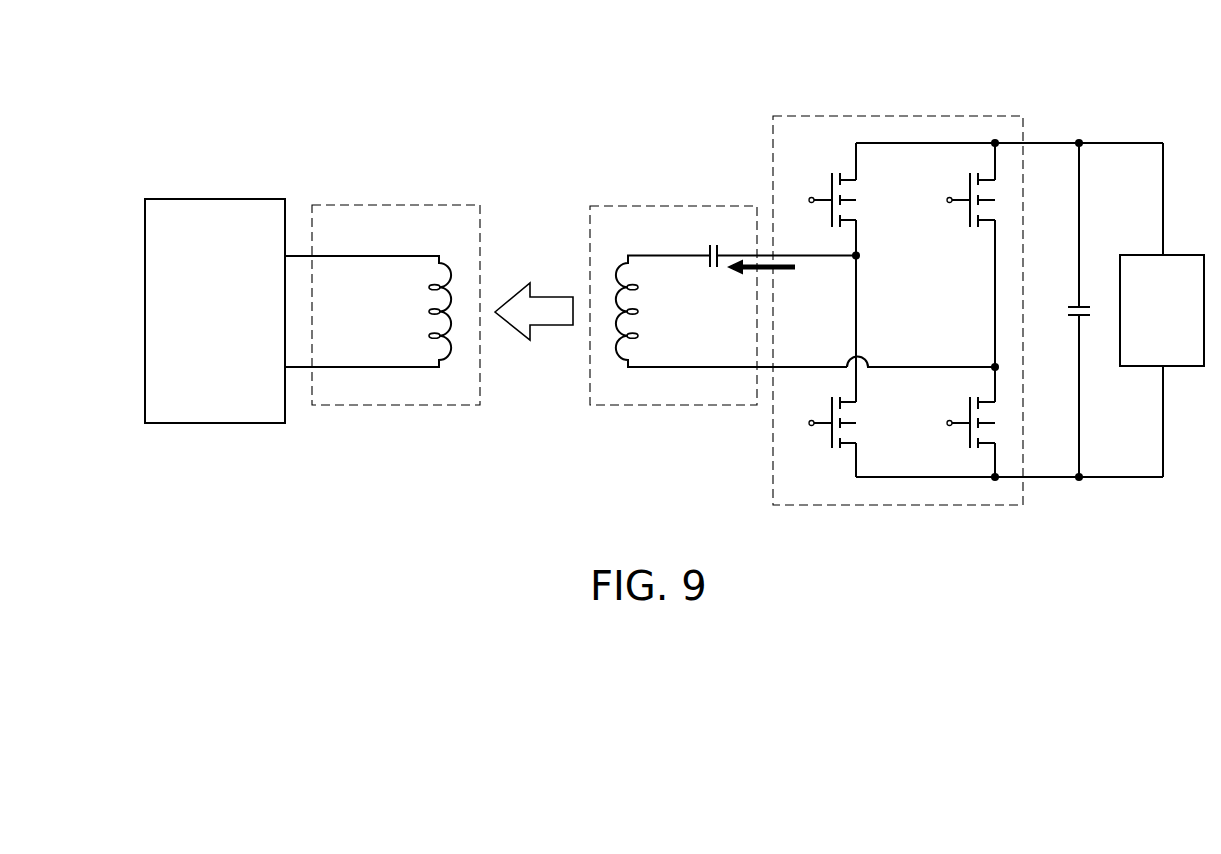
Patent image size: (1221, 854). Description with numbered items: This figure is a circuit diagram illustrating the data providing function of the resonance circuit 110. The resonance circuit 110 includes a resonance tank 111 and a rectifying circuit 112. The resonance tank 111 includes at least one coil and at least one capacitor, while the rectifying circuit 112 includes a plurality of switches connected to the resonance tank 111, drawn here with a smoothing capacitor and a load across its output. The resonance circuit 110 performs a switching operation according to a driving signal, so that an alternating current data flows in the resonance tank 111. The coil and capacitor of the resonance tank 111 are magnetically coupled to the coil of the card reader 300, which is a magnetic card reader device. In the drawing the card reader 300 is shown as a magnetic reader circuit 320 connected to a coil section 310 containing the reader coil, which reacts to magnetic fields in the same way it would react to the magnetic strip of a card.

The card reader 300 is at (311, 123).
The reader coil unit 310 is at (395, 205).
The magnetic reader circuit 320 is at (213, 198).
The resonance circuit 110 is at (1006, 35).
The resonance tank 111 is at (673, 205).
The rectifying circuit 112 is at (912, 115).